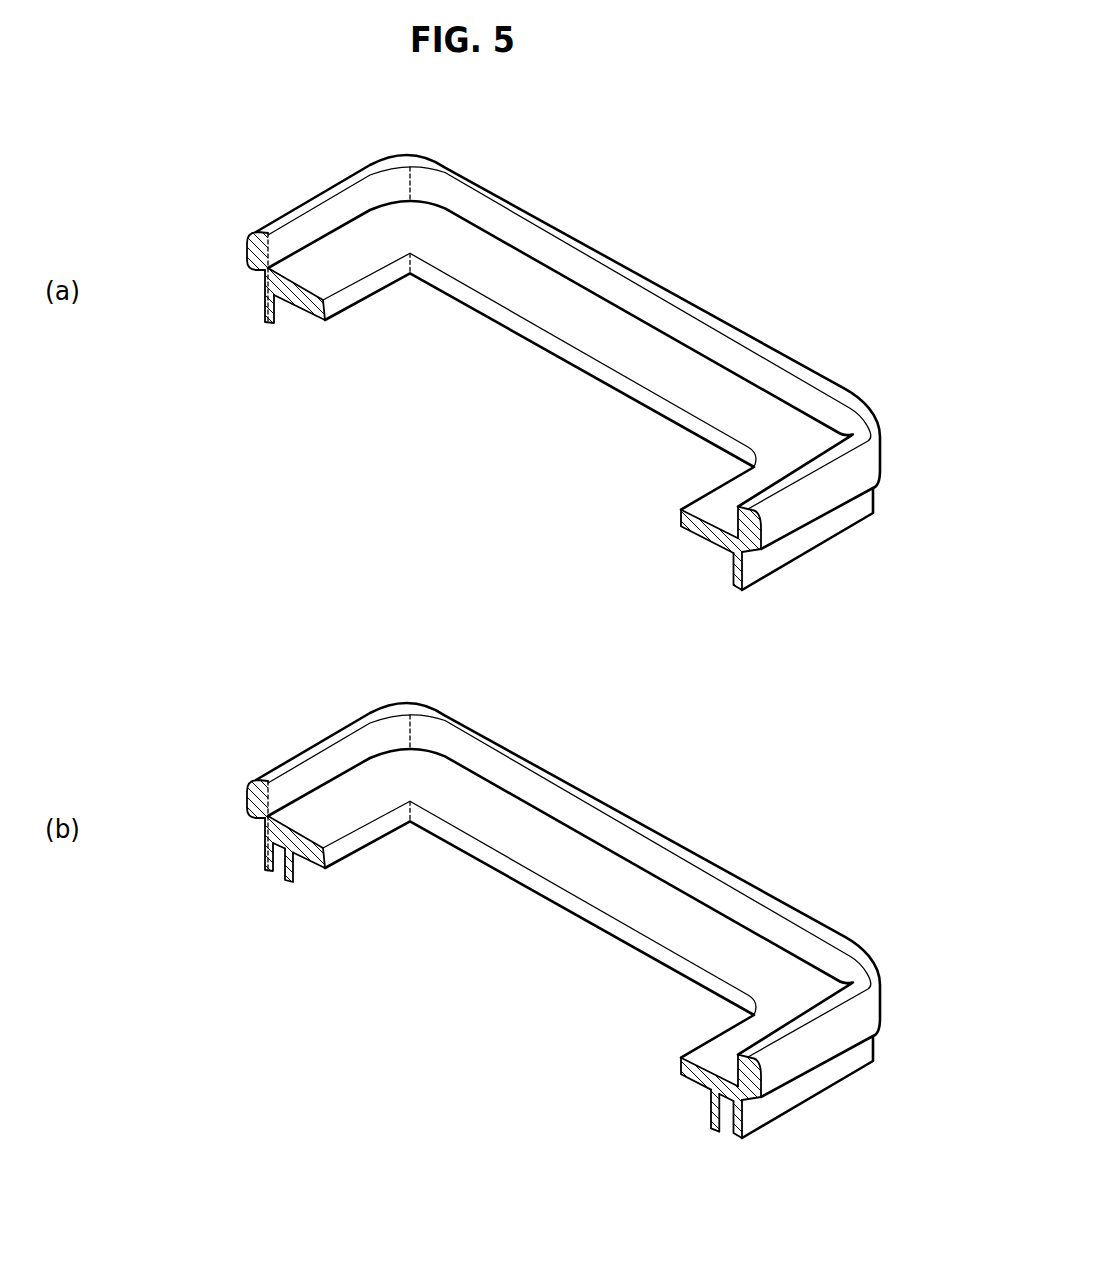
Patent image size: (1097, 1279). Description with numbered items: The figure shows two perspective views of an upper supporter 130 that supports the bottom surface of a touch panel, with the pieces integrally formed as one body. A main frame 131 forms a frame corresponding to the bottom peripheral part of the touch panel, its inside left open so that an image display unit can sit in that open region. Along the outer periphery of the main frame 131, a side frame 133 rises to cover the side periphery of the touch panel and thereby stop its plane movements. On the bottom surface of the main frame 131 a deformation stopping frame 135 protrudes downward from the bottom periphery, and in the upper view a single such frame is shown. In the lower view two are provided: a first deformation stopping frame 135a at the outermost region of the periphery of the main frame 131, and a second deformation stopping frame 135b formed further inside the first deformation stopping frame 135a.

The upper supporter 130 is at (676, 227).
The main frame 131 is at (297, 297).
The side frame 133 is at (252, 250).
The deformation stopping frame 135 is at (268, 306).
The first deformation stopping frame 135a is at (266, 860).
The second deformation stopping frame 135b is at (287, 866).